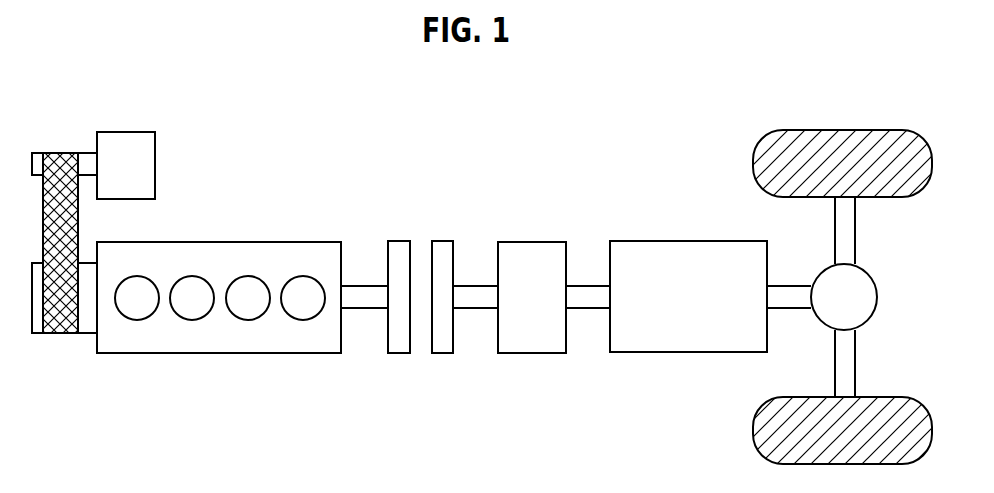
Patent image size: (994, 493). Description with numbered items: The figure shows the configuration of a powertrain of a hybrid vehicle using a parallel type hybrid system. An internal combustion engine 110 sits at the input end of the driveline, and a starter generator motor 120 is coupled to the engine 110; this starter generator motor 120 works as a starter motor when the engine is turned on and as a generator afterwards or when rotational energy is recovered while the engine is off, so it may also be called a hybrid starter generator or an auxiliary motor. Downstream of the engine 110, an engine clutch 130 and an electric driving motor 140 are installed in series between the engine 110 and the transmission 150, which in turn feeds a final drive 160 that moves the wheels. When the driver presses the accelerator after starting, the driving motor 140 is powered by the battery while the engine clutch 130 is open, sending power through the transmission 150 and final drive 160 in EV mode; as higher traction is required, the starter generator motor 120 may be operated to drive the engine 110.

The internal combustion engine 110 is at (295, 242).
The starter generator motor 120 is at (157, 145).
The engine clutch 130 is at (448, 240).
The electric motor 140 is at (537, 241).
The transmission 150 is at (725, 241).
The final drive 160 is at (873, 282).